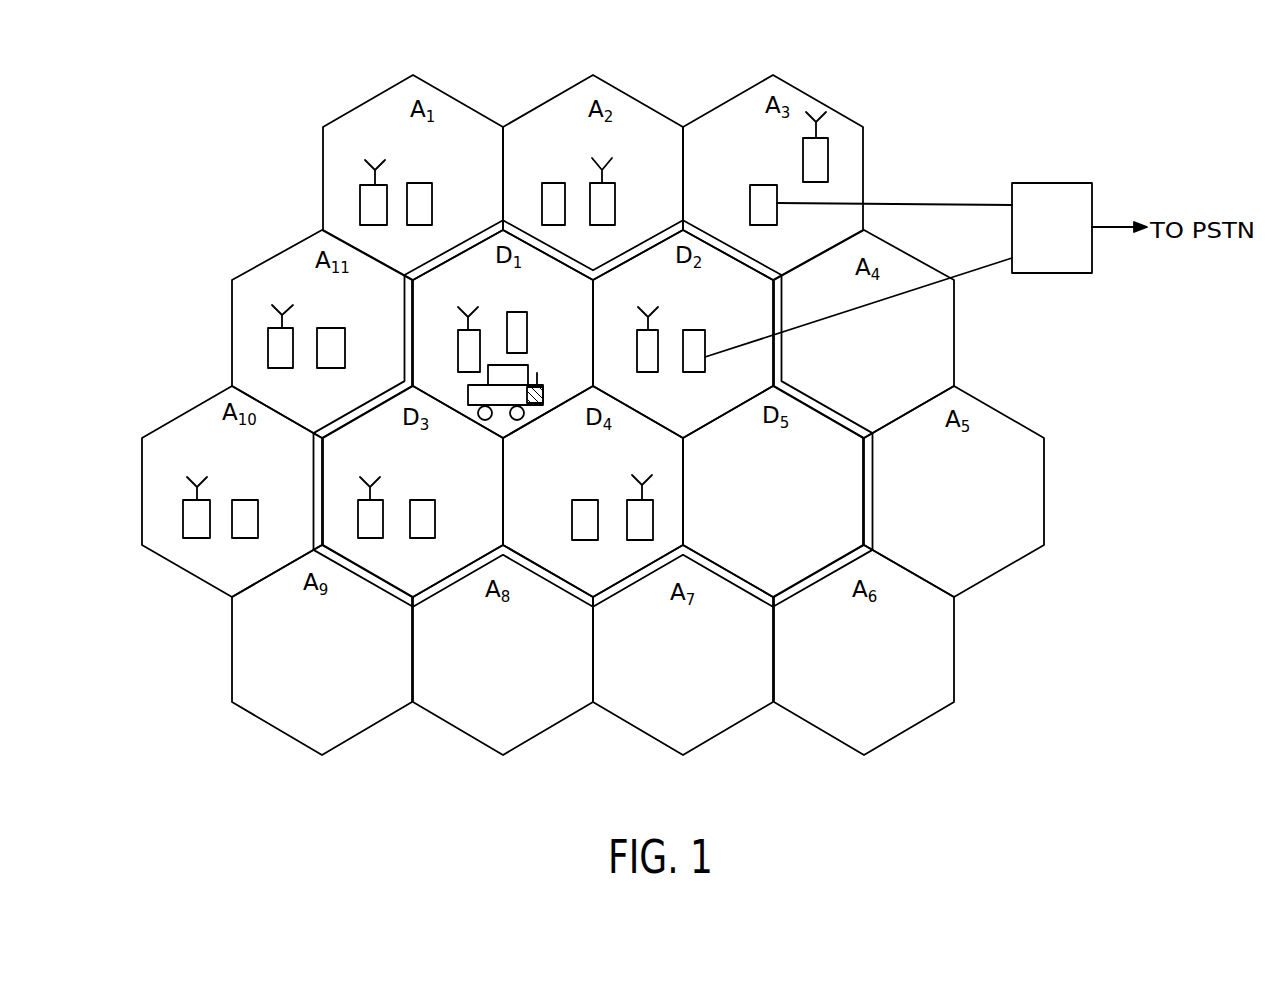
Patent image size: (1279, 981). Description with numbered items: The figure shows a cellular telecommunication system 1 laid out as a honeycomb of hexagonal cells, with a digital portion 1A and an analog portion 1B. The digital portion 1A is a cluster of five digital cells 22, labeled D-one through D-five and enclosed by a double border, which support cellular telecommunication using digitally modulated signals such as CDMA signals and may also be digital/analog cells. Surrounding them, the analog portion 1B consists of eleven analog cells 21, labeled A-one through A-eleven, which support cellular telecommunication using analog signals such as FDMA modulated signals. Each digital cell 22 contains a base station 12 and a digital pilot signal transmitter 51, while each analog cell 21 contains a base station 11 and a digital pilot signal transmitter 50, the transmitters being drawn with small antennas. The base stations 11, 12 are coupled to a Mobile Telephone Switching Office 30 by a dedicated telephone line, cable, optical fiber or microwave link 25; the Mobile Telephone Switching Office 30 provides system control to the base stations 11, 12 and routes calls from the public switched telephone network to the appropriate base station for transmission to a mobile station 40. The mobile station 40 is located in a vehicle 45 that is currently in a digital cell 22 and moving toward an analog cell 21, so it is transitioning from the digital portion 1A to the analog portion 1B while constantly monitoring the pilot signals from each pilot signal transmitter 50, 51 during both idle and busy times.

The cellular telecommunication system 1 is at (593, 397).
The digital portion 1A is at (623, 369).
The analog portion 1B is at (593, 434).
The base station 11 is at (428, 197).
The base station 12 is at (525, 322).
The analog cell 21 is at (362, 713).
The digital cell 22 is at (463, 530).
The link 25 is at (983, 262).
The Mobile Telephone Switching Office (MTSO) 30 is at (1055, 274).
The mobile station 40 is at (545, 395).
The vehicle 45 is at (468, 393).
The digital pilot signal transmitter 50 is at (370, 205).
The digital pilot signal transmitter 51 is at (462, 343).